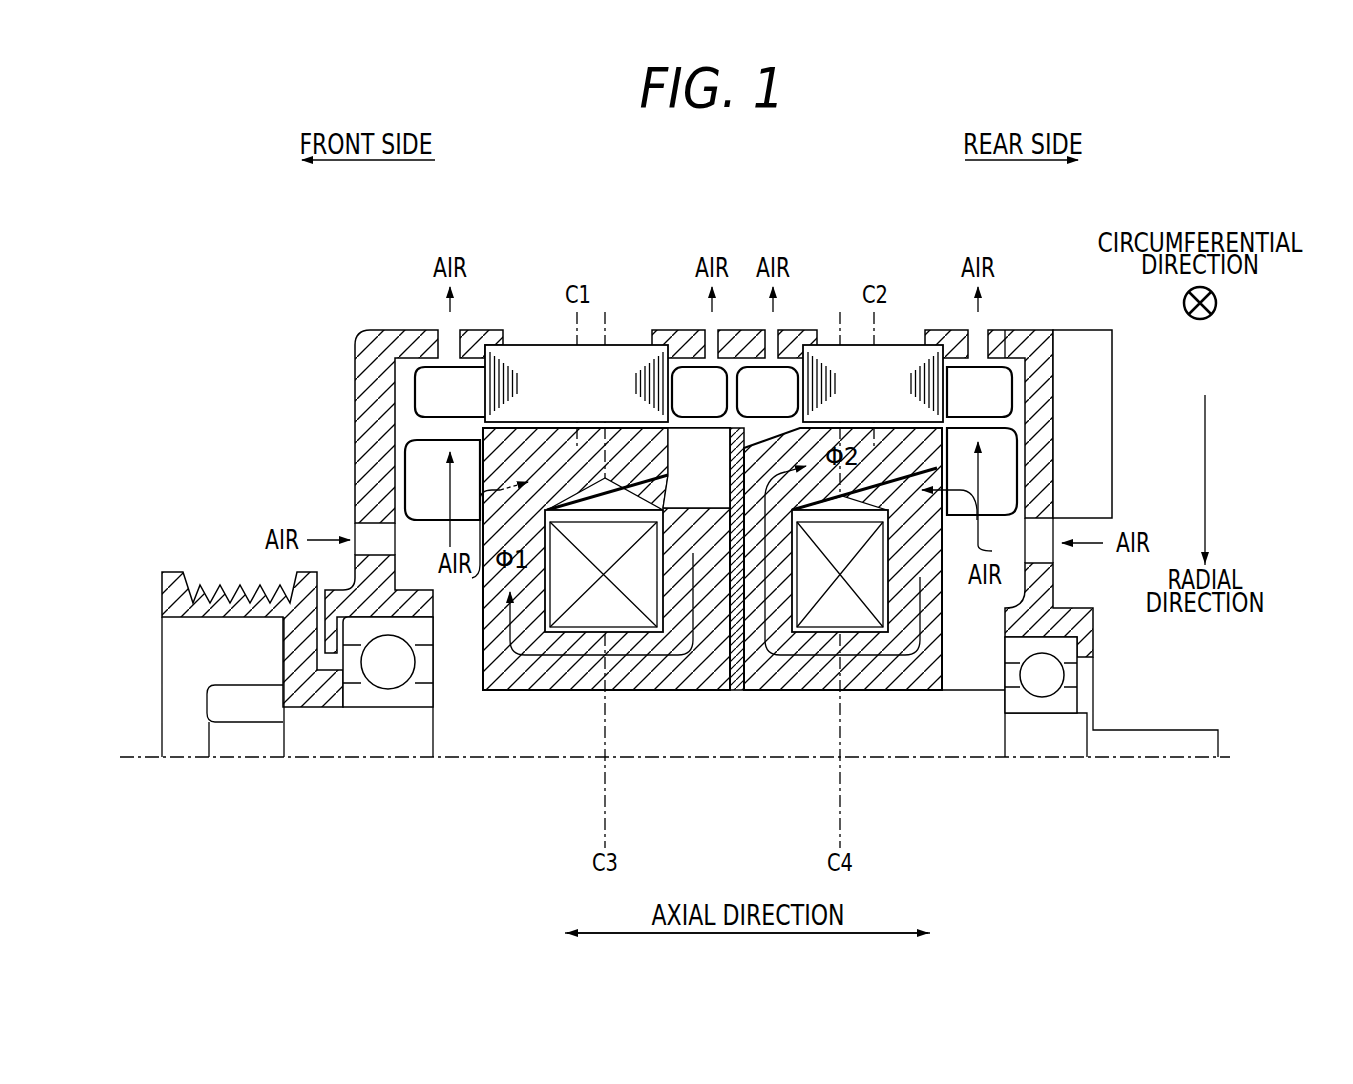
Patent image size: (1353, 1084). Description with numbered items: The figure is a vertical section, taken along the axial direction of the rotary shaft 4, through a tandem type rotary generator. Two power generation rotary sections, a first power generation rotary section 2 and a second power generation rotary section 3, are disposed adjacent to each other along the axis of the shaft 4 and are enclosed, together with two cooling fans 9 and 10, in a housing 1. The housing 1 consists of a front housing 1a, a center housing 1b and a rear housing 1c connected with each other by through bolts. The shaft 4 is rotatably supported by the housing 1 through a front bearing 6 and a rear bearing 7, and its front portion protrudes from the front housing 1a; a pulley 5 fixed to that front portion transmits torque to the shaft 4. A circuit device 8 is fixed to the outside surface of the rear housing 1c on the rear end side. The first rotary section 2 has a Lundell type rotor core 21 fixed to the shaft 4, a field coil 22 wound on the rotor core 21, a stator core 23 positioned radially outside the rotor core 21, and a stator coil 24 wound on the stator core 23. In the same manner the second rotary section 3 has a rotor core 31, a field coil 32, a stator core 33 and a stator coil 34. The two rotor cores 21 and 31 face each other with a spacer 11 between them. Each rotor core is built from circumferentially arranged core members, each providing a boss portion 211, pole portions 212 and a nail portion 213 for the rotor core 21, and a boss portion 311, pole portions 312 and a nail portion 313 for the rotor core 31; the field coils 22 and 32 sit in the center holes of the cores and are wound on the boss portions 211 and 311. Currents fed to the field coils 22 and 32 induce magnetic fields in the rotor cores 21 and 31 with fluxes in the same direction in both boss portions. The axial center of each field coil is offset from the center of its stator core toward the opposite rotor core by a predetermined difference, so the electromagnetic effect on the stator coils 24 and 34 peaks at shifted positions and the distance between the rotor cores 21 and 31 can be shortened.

The housing 1 is at (353, 332).
The front housing 1a is at (368, 410).
The center housing 1b is at (797, 328).
The rear housing 1c is at (1035, 330).
The first power generation rotary section 2 is at (612, 538).
The second power generation rotary section 3 is at (869, 530).
The rotary shaft 4 is at (940, 730).
The pulley 5 is at (175, 570).
The bearing 6 is at (363, 693).
The bearing 7 is at (1043, 703).
The circuit device 8 is at (1092, 380).
The cooling fan 9 is at (415, 484).
The cooling fan 10 is at (1000, 455).
The spacer 11 is at (733, 692).
The rotor core 21 is at (535, 698).
The boss portion 211 is at (580, 670).
The pole portion 212 is at (495, 620).
The nail portion 213 is at (552, 447).
The field coil 22 is at (633, 580).
The stator core 23 is at (520, 350).
The stator coil 24 is at (700, 455).
The rotor core 31 is at (788, 698).
The boss portion 311 is at (818, 672).
The pole portion 312 is at (755, 627).
The nail portion 313 is at (920, 467).
The field coil 32 is at (858, 613).
The stator core 33 is at (857, 365).
The stator coil 34 is at (1005, 330).